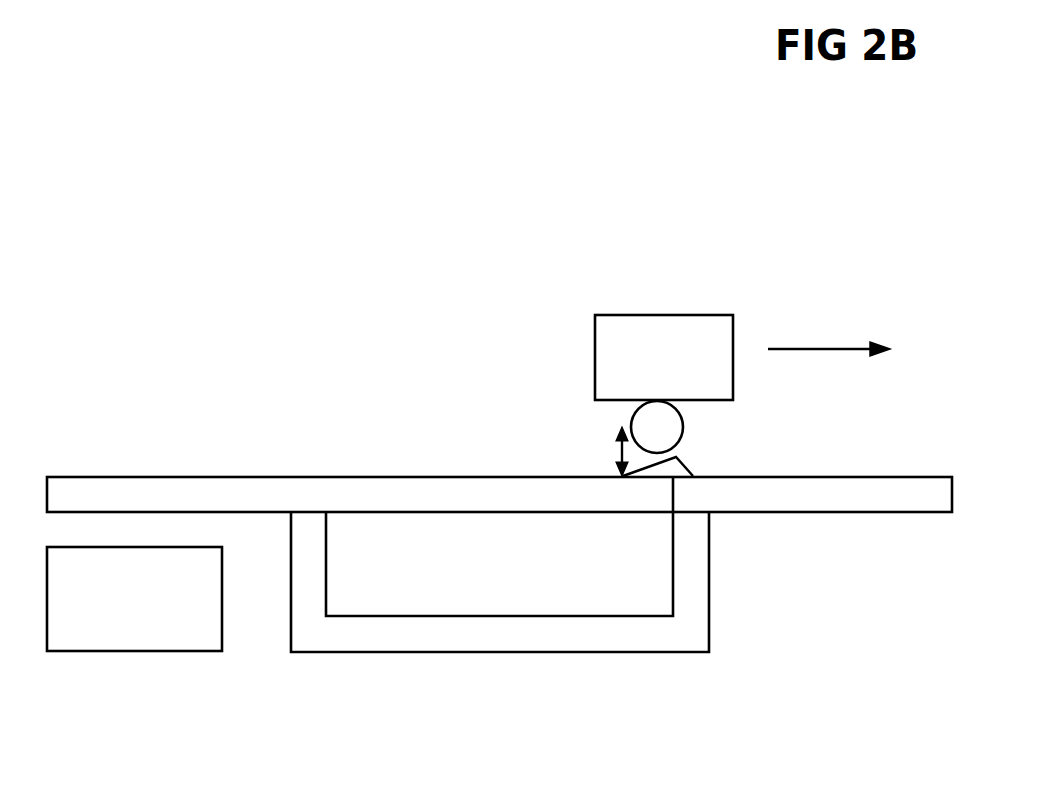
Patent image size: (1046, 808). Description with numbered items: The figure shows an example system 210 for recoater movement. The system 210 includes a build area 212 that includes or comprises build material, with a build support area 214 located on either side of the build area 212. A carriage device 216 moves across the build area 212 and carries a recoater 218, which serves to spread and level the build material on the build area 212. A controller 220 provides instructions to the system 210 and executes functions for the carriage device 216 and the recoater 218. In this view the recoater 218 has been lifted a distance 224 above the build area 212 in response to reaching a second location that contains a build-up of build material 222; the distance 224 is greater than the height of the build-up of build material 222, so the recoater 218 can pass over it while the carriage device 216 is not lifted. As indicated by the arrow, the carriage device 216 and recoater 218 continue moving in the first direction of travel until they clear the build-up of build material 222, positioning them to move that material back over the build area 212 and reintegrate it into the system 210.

The system 210 is at (198, 255).
The build area 212 is at (517, 513).
The build support area 214 is at (825, 477).
The carriage device 216 is at (734, 317).
The recoater 218 is at (631, 424).
The controller 220 is at (133, 652).
The build-up of build material 222 is at (678, 457).
The distance 224 is at (619, 455).